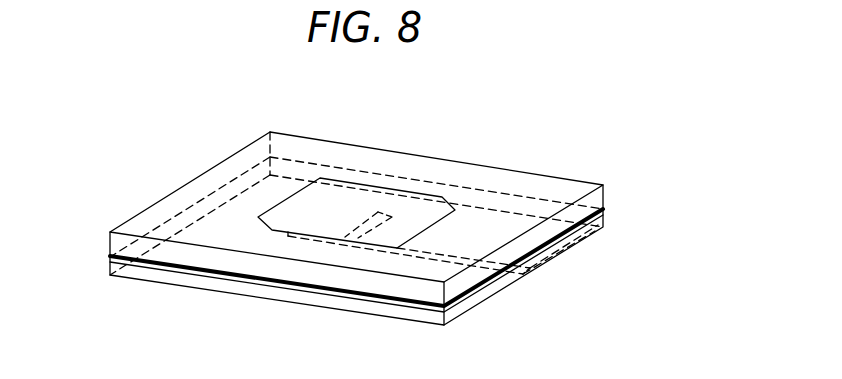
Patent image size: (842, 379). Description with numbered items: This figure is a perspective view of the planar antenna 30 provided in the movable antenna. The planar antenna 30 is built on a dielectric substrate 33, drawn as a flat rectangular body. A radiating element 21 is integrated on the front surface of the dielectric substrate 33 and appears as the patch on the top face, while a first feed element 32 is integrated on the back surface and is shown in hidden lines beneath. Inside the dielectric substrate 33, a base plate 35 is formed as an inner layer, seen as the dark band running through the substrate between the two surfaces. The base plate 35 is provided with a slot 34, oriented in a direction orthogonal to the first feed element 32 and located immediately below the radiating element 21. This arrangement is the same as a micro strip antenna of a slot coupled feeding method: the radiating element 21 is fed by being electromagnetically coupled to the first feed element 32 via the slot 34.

The radiating element 21 is at (318, 196).
The planar antenna 30 is at (165, 285).
The first feed element 32 is at (520, 268).
The dielectric substrate 33 is at (145, 215).
The slot 34 is at (378, 212).
The base plate 35 is at (603, 209).